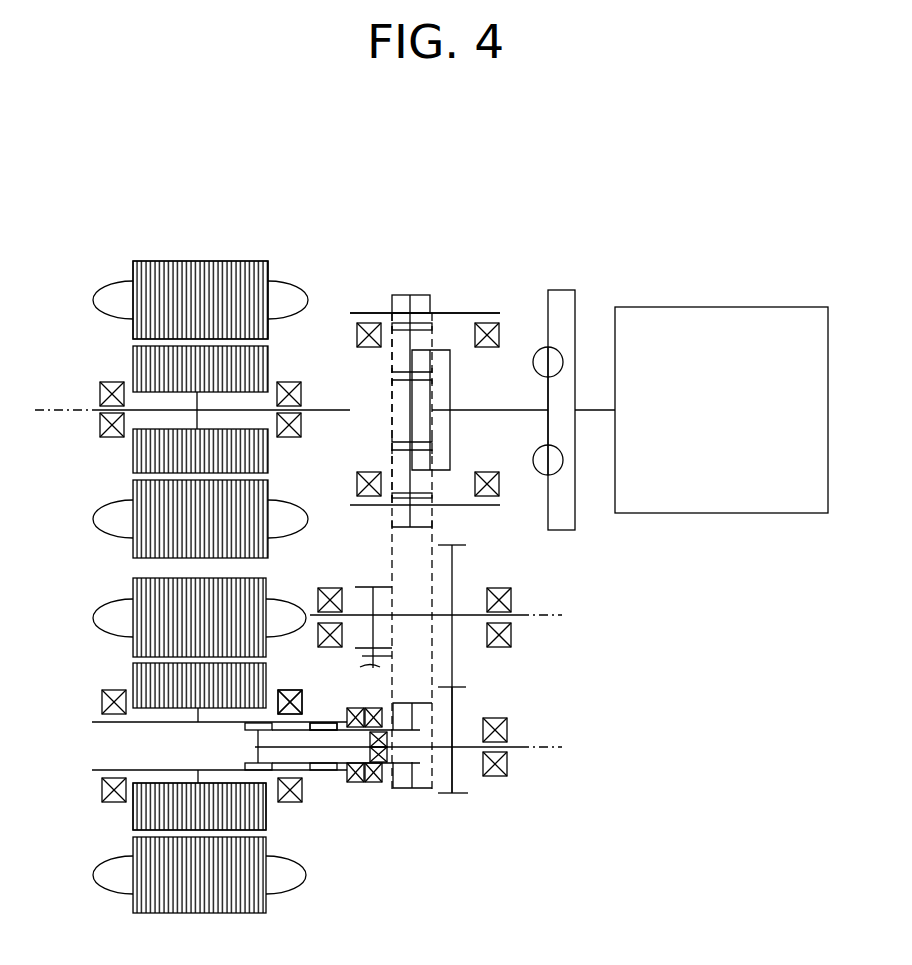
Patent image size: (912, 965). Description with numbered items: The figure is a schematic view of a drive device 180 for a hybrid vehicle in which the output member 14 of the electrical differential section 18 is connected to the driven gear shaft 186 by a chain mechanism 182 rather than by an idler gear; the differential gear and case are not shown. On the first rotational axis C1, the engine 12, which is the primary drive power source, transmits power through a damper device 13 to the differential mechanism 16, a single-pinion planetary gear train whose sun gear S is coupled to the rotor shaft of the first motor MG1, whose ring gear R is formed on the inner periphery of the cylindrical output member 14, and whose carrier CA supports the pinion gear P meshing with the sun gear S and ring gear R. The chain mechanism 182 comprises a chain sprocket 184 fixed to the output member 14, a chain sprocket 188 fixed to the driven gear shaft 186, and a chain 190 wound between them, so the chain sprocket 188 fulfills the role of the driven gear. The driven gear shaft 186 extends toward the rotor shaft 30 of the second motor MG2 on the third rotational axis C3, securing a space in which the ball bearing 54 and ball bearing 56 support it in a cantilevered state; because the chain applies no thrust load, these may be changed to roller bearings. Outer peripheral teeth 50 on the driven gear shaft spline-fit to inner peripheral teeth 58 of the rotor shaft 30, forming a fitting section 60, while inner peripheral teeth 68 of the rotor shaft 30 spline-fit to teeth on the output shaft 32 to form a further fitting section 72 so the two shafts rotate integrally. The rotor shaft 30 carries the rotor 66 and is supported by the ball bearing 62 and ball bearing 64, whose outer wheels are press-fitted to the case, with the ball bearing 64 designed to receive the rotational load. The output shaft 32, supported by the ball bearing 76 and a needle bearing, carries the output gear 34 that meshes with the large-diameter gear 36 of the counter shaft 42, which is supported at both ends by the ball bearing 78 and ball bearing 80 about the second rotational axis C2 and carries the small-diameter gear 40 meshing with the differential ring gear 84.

The drive device 180 is at (604, 208).
The first motor MG1 is at (200, 256).
The electrical differential section 18 is at (309, 272).
The first rotational axis C1 is at (68, 412).
The differential mechanism 16 is at (371, 312).
The chain 190 is at (390, 568).
The chain mechanism 182 is at (376, 532).
The chain sprocket 184 is at (405, 297).
The sun gear S is at (400, 376).
The pinion gear P is at (400, 444).
The ring gear R is at (422, 497).
The carrier CA is at (418, 352).
The output member 14 is at (460, 313).
The damper device 13 is at (597, 303).
The engine 12 is at (708, 320).
The second rotational axis C2 is at (550, 618).
The small-diameter gear 40 is at (371, 585).
The differential ring gear 84 is at (362, 652).
The ball bearing 78 is at (318, 600).
The ball bearing 80 is at (487, 600).
The large-diameter gear 36 is at (466, 548).
The counter shaft 42 is at (477, 618).
The output shaft 32 is at (452, 746).
The output gear 34 is at (468, 793).
The ball bearing 76 is at (507, 733).
The third rotational axis C3 is at (552, 750).
The second motor MG2 is at (100, 657).
The rotor 66 is at (142, 812).
The ball bearing 62 is at (110, 803).
The ball bearing 64 is at (290, 690).
The rotor shaft 30 is at (150, 723).
The inner peripheral teeth 68 is at (256, 735).
The fitting section 72 is at (250, 762).
The outer peripheral teeth 50 is at (322, 722).
The inner peripheral teeth 58 is at (323, 726).
The fitting section 60 is at (322, 788).
The ball bearing 56 is at (376, 784).
The ball bearing 54 is at (370, 785).
The driven gear shaft 186 is at (386, 763).
The chain sprocket 188 is at (412, 790).